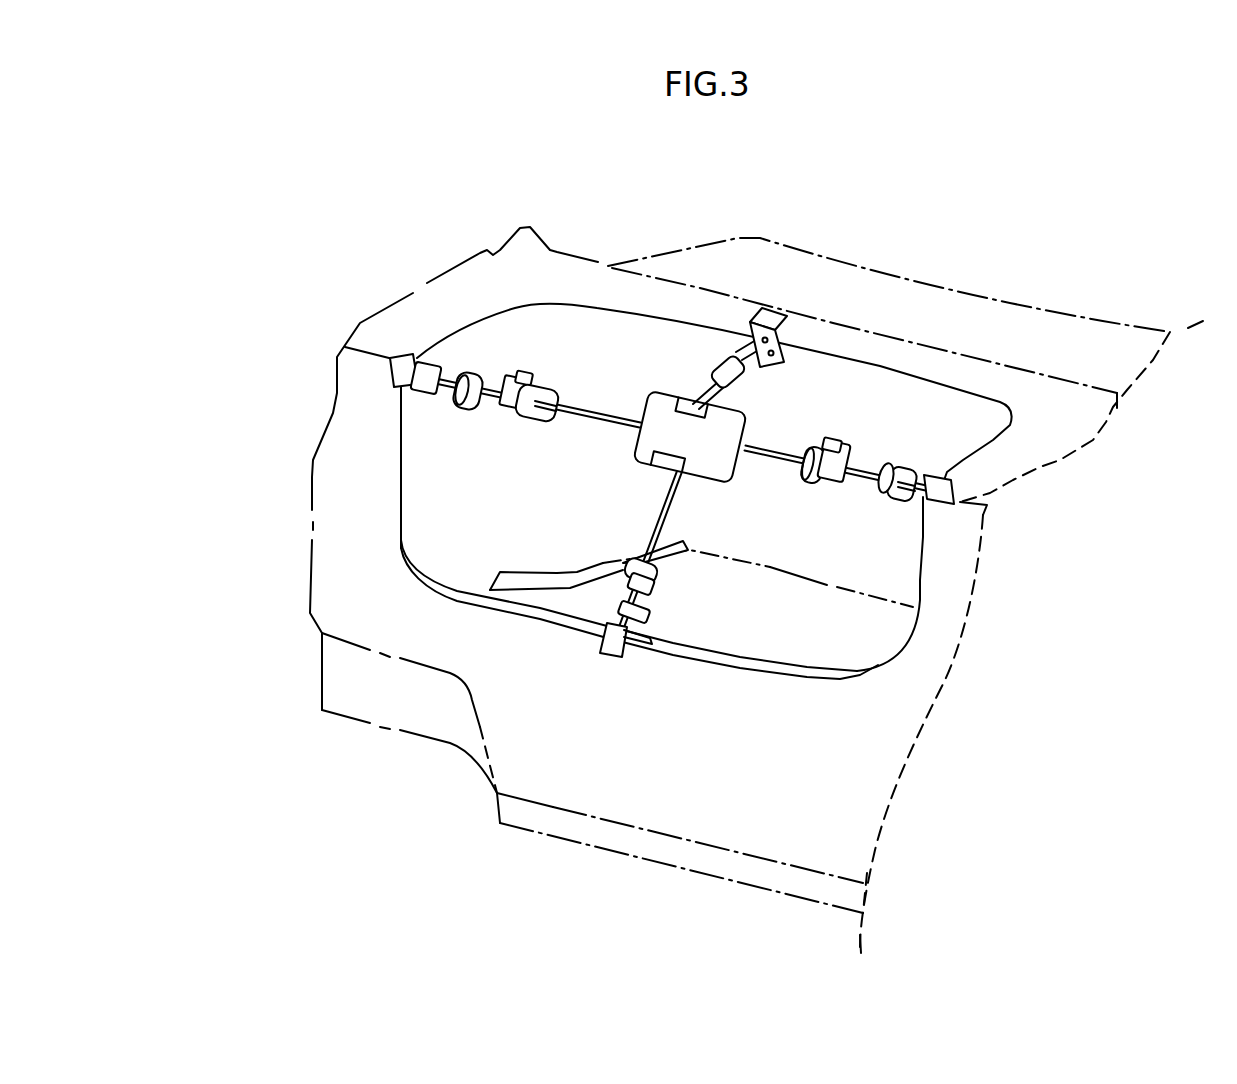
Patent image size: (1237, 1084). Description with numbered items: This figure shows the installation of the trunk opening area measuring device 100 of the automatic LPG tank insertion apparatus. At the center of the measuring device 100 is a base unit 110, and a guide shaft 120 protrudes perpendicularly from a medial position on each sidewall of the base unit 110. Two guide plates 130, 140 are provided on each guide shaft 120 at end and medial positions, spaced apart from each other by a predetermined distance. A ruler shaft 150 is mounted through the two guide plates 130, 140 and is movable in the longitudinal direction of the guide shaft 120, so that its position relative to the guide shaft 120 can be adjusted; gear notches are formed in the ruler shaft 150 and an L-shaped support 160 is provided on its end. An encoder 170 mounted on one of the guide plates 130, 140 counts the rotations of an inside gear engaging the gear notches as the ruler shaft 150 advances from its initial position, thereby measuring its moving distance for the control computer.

The trunk opening area measuring device 100 is at (631, 376).
The base unit 110 is at (637, 443).
The guide shaft 120 is at (773, 450).
The guide plate 130 is at (807, 482).
The guide plate 140 is at (890, 503).
The ruler shaft 150 is at (880, 460).
The L-shaped support 160 is at (947, 477).
The encoder 170 is at (833, 467).